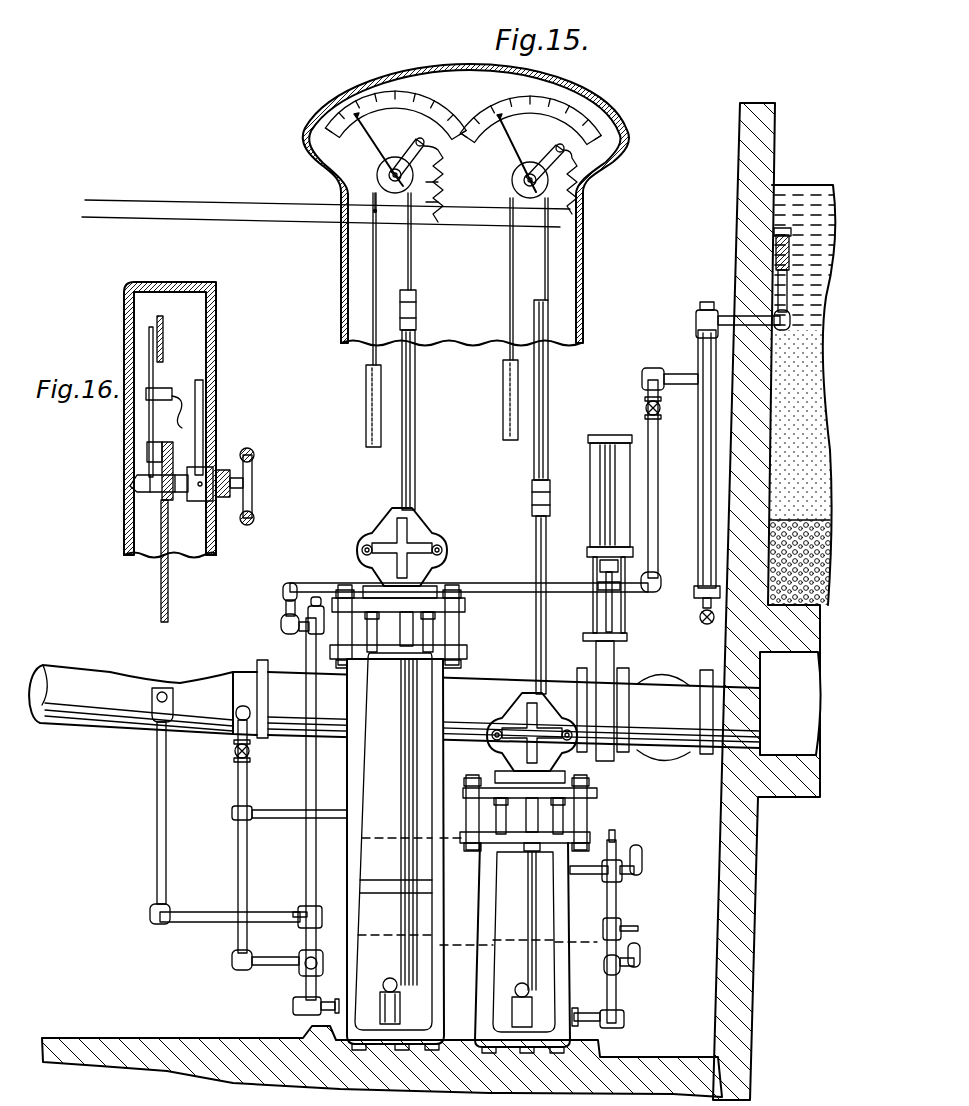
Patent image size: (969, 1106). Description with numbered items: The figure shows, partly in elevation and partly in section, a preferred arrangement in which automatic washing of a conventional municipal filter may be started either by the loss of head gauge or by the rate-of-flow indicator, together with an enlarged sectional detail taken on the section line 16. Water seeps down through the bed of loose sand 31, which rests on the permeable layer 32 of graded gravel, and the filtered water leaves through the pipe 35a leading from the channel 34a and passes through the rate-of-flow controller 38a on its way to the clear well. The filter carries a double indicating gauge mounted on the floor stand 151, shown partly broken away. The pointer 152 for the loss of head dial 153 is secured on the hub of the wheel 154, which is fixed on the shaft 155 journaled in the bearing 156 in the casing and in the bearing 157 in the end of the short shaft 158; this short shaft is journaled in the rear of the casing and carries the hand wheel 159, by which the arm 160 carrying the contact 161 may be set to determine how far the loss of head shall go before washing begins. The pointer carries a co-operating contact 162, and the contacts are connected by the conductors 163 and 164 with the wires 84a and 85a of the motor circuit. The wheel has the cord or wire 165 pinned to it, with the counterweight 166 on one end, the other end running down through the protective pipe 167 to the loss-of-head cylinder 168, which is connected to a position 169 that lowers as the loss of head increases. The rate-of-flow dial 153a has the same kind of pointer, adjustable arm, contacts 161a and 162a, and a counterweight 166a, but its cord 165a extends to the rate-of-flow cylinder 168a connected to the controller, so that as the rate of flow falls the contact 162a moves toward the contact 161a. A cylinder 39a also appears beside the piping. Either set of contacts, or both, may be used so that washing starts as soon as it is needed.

In FIG. 15, the section line 16 is at (397, 66).
In FIG. 15, the floor stand 151 is at (466, 205).
In FIG. 15, the pointer 152 is at (378, 151).
In FIG. 16, the pointer 152 is at (158, 370).
In FIG. 15, the loss of head dial 153 is at (330, 112).
In FIG. 16, the loss of head dial 153 is at (163, 334).
In FIG. 15, the rate-of-flow dial 153a is at (661, 124).
In FIG. 15, the wheel 154 is at (377, 175).
In FIG. 16, the wheel 154 is at (158, 512).
In FIG. 16, the shaft 155 is at (146, 492).
In FIG. 16, the bearing 156 is at (135, 479).
In FIG. 16, the bearing 157 is at (173, 503).
In FIG. 16, the short shaft 158 is at (212, 480).
In FIG. 16, the hand wheel 159 is at (258, 473).
In FIG. 15, the arm 160 is at (443, 202).
In FIG. 16, the arm 160 is at (198, 415).
In FIG. 15, the contact 161 is at (430, 148).
In FIG. 16, the contact 161 is at (178, 392).
In FIG. 15, the contact 161a is at (566, 150).
In FIG. 15, the contact 162 is at (390, 153).
In FIG. 16, the contact 162 is at (144, 394).
In FIG. 15, the contact 162a is at (549, 146).
In FIG. 15, the conductor 163 is at (440, 181).
In FIG. 15, the conductor 164 is at (387, 194).
In FIG. 15, the cord or wire 165 is at (345, 292).
In FIG. 16, the cord or wire 165 is at (170, 588).
In FIG. 15, the cord 165a is at (534, 335).
In FIG. 15, the counterweight 166 is at (366, 405).
In FIG. 15, the counterweight 166a is at (503, 403).
In FIG. 15, the protective pipe 167 is at (415, 466).
In FIG. 15, the loss-of-head cylinder 168 is at (372, 774).
In FIG. 15, the rate-of-flow cylinder 168a is at (530, 898).
In FIG. 15, the position 169 is at (365, 878).
In FIG. 15, the bed of loose sand 31 is at (785, 473).
In FIG. 15, the permeable layer 32 is at (768, 549).
In FIG. 15, the channel 34a is at (812, 702).
In FIG. 15, the pipe 35a is at (490, 692).
In FIG. 15, the rate-of-flow controller 38a is at (202, 683).
In FIG. 15, the cylinder 39a is at (610, 658).
In FIG. 15, the wire 84a is at (195, 200).
In FIG. 15, the wire 85a is at (124, 234).